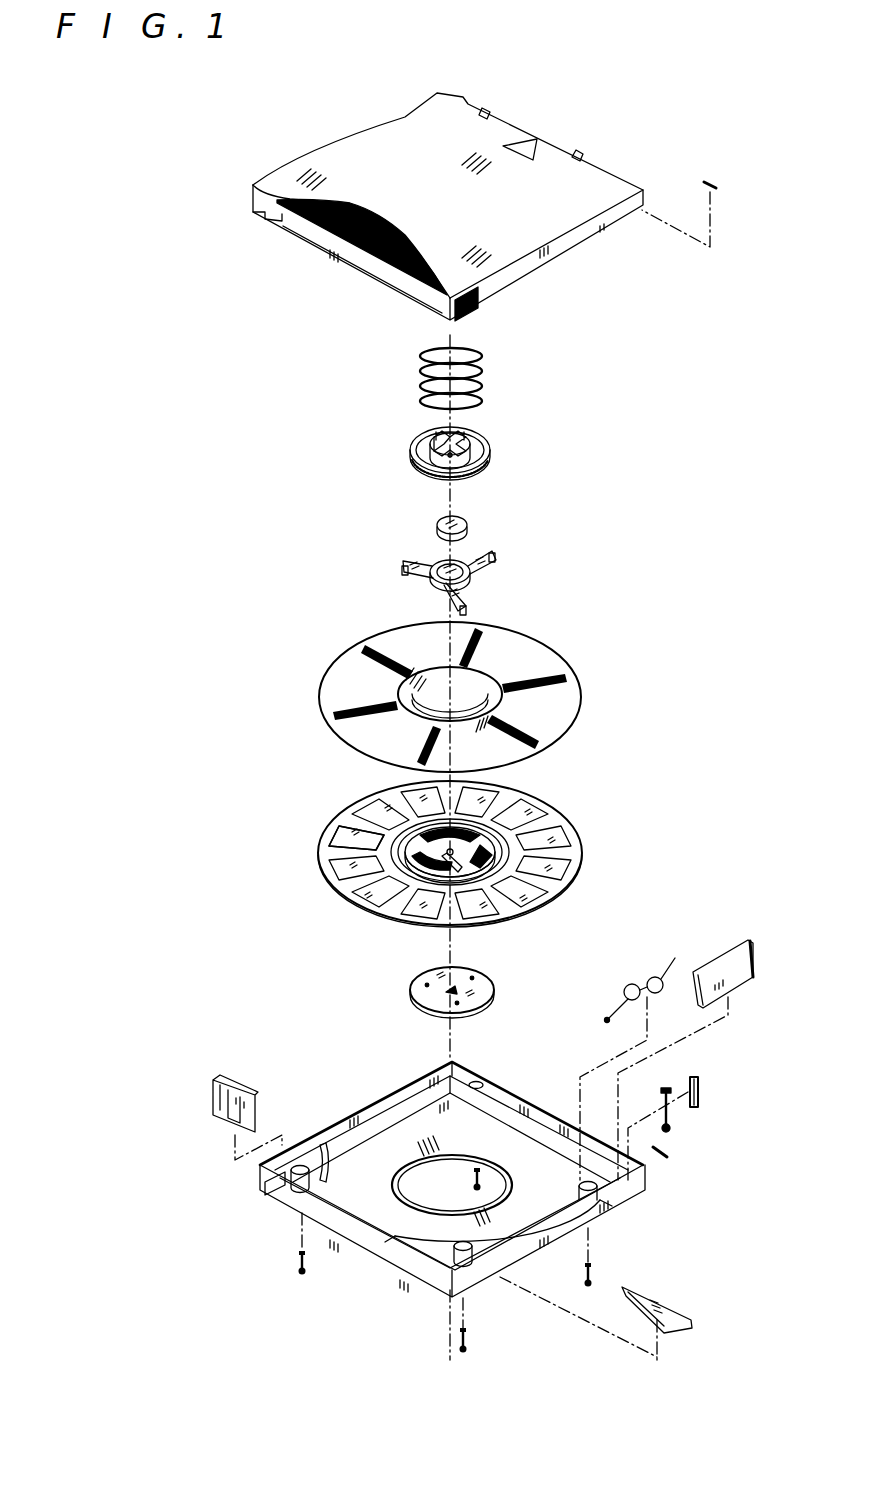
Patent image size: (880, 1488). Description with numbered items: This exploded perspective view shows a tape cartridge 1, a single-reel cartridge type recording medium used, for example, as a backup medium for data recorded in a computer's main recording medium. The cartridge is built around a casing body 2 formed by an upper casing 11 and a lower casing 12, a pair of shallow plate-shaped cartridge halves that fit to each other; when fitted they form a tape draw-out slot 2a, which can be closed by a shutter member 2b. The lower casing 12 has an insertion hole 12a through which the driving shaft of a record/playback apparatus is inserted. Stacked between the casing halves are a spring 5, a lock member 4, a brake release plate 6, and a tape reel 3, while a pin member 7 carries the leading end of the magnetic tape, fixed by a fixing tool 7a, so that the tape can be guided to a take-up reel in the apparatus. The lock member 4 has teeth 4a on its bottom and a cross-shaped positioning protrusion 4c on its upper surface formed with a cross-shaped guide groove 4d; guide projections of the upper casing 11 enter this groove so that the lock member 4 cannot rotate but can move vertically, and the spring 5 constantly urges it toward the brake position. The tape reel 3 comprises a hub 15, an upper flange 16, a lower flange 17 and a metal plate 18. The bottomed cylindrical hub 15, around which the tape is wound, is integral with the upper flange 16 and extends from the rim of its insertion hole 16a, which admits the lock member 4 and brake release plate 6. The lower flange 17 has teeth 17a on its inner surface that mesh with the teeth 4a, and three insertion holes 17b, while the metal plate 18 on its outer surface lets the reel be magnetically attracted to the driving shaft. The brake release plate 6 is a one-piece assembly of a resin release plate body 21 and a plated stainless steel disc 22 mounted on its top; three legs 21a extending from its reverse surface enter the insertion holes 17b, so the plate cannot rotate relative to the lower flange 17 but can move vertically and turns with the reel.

The tape cartridge 1 is at (637, 131).
The upper casing 11 is at (611, 190).
The tape draw-out slot 2a is at (620, 239).
The casing body 2 is at (289, 1065).
The spring 5 is at (482, 376).
The lock member 4 is at (490, 452).
The positioning protrusion 4c is at (436, 427).
The guide groove 4d is at (466, 427).
The teeth 4a is at (430, 470).
The disc 22 is at (470, 524).
The brake release plate 6 is at (583, 482).
The release plate body 21 is at (470, 575).
The legs 21a is at (490, 566).
The upper flange 16 is at (343, 664).
The insertion hole 16a is at (437, 687).
The hub 15 is at (490, 686).
The lower flange 17 is at (530, 806).
The teeth 17a is at (428, 817).
The insertion holes 17b is at (350, 821).
The tape reel 3 is at (620, 600).
The metal plate 18 is at (475, 978).
The shutter member 2b is at (722, 973).
The lower casing 12 is at (512, 1138).
The insertion hole 12a is at (421, 1182).
The pin member 7 is at (672, 1115).
The fixing tool 7a is at (700, 1093).